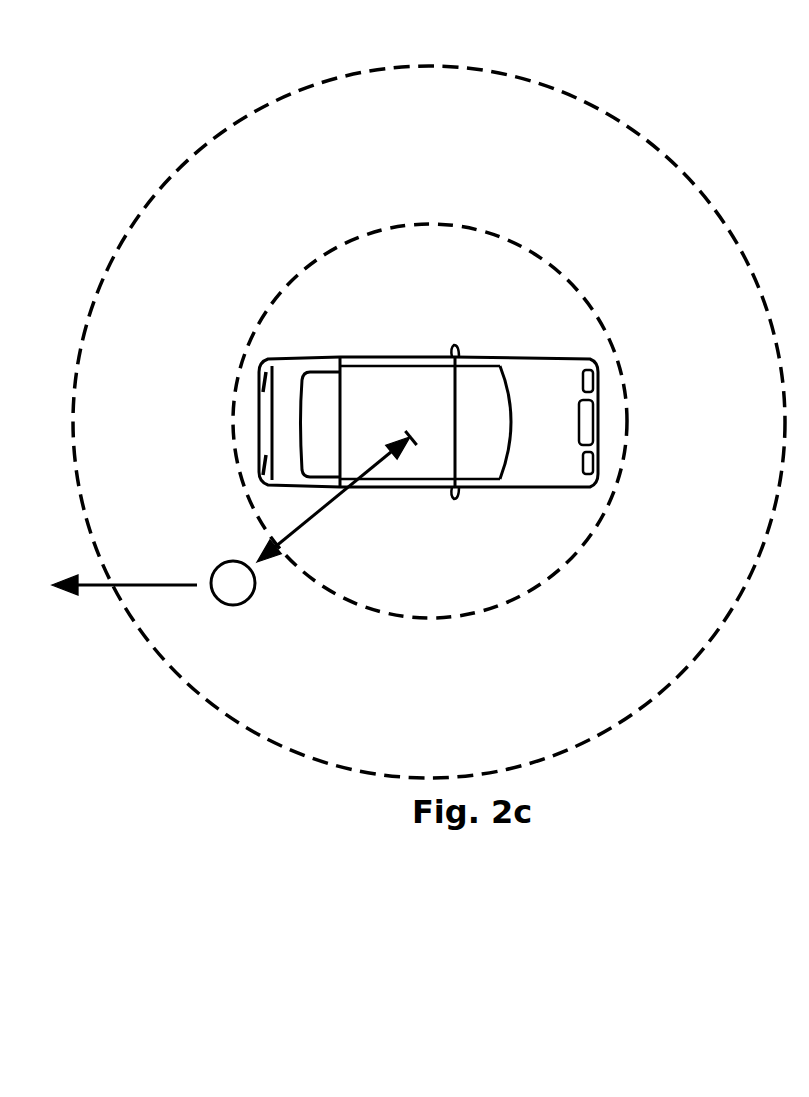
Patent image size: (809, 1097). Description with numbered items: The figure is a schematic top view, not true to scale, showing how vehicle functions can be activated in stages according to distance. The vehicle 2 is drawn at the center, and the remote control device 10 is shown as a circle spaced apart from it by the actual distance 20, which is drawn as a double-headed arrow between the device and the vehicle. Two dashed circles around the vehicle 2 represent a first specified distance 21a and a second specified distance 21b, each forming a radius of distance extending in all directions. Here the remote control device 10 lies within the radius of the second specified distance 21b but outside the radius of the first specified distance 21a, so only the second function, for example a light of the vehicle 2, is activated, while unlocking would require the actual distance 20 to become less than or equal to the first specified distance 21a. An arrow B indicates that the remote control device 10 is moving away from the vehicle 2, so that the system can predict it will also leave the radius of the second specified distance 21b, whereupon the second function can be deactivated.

The vehicle 2 is at (501, 360).
The remote control device 10 is at (249, 601).
The actual distance 20 is at (328, 507).
The first specified distance 21a is at (617, 493).
The second specified distance 21b is at (710, 637).
The arrow B is at (90, 587).